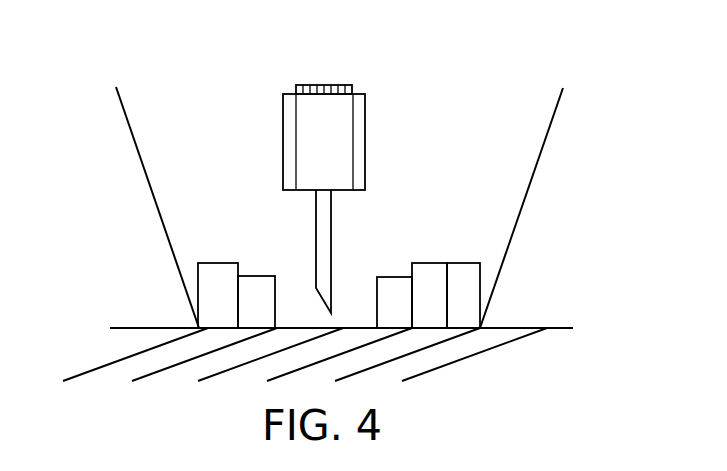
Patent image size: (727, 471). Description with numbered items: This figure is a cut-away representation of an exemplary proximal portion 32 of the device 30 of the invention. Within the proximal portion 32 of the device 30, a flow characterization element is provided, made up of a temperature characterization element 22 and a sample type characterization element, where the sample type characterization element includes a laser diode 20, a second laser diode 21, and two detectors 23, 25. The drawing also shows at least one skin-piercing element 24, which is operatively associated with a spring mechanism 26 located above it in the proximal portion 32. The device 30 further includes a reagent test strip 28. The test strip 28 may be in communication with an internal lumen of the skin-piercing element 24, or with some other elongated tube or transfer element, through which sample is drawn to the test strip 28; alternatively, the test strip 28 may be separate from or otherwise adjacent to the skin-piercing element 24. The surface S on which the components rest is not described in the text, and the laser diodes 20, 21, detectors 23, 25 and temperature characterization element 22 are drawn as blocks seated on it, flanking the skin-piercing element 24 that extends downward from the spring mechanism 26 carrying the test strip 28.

The laser diode 20 is at (473, 287).
The laser diode 21 is at (213, 263).
The temperature characterization element 22 is at (385, 290).
The detector 23 is at (253, 276).
The skin-piercing element 24 is at (323, 218).
The detector 25 is at (435, 272).
The spring mechanism 26 is at (365, 138).
The reagent test strip 28 is at (325, 85).
The device 30 is at (434, 90).
The proximal portion 32 is at (145, 174).
The substrate S is at (514, 322).